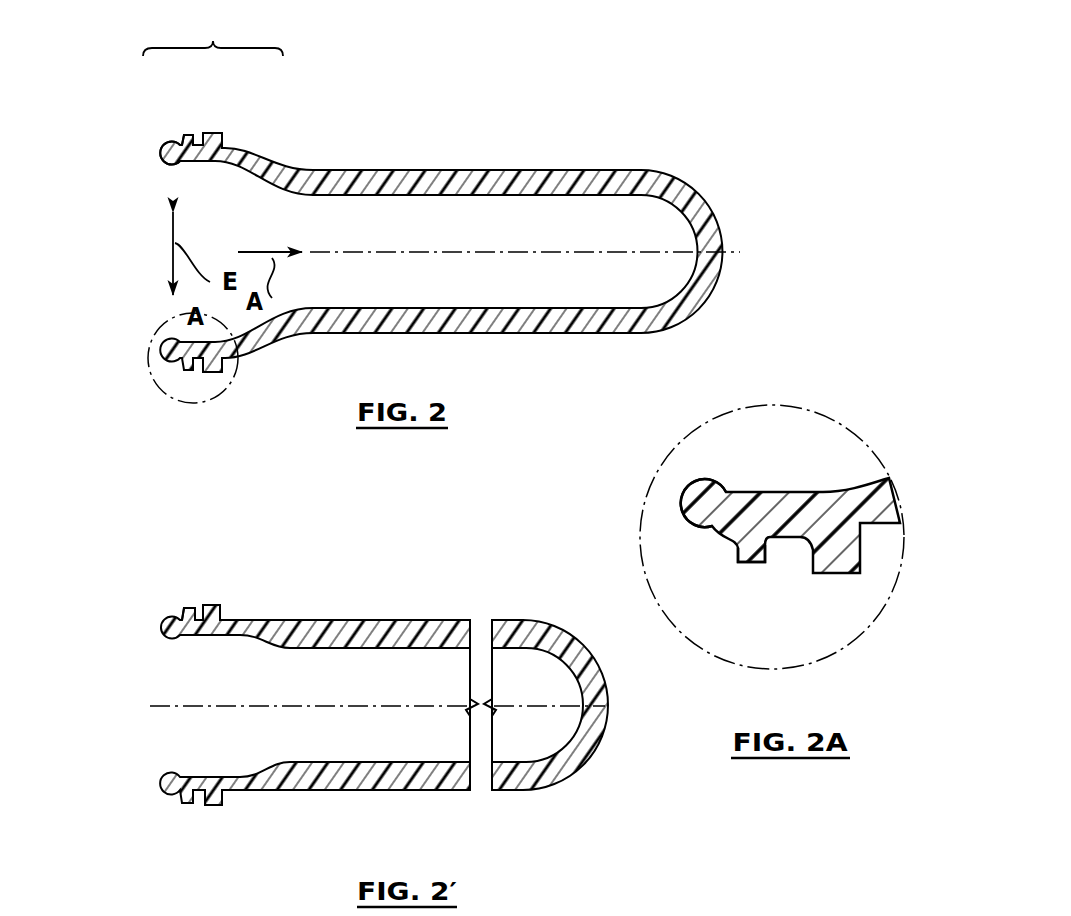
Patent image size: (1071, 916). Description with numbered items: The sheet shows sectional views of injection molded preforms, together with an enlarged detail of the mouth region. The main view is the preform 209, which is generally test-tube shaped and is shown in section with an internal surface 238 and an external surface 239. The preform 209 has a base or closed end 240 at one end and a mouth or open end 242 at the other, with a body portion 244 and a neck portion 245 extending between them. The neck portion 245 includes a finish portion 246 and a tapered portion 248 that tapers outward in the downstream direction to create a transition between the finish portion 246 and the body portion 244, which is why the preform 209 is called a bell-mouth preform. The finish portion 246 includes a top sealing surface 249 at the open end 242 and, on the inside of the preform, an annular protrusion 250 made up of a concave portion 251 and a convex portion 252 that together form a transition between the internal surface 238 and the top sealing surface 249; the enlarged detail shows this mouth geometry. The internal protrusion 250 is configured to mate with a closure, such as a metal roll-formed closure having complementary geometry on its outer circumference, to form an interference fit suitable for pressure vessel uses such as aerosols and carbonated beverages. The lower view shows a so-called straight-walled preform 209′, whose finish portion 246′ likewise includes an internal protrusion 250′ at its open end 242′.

In FIG. 2, the preform 209 is at (153, 400).
In FIG. 2, the internal surface 238 is at (652, 205).
In FIG. 2A, the internal surface 238 is at (882, 477).
In FIG. 2, the external surface 239 is at (568, 170).
In FIG. 2A, the external surface 239 is at (880, 522).
In FIG. 2, the closed end 240 is at (742, 240).
In FIG. 2, the open end 242 is at (152, 268).
In FIG. 2, the body portion 244 is at (465, 170).
In FIG. 2, the neck portion 245 is at (213, 34).
In FIG. 2, the finish portion 246 is at (196, 130).
In FIG. 2A, the finish portion 246 is at (777, 572).
In FIG. 2, the tapered portion 248 is at (254, 135).
In FIG. 2, the top sealing surface 249 is at (163, 150).
In FIG. 2A, the top sealing surface 249 is at (684, 512).
In FIG. 2, the annular protrusion 250 is at (183, 163).
In FIG. 2A, the annular protrusion 250 is at (712, 480).
In FIG. 2, the concave portion 251 is at (200, 164).
In FIG. 2A, the concave portion 251 is at (746, 490).
In FIG. 2, the convex portion 252 is at (168, 165).
In FIG. 2A, the convex portion 252 is at (690, 494).
In FIG. 2′, the finish portion 246′ is at (198, 594).
In FIG. 2′, the internal protrusion 250′ is at (168, 640).
In FIG. 2′, the open end 242′ is at (170, 726).
In FIG. 2′, the straight-walled preform 209′ is at (190, 810).